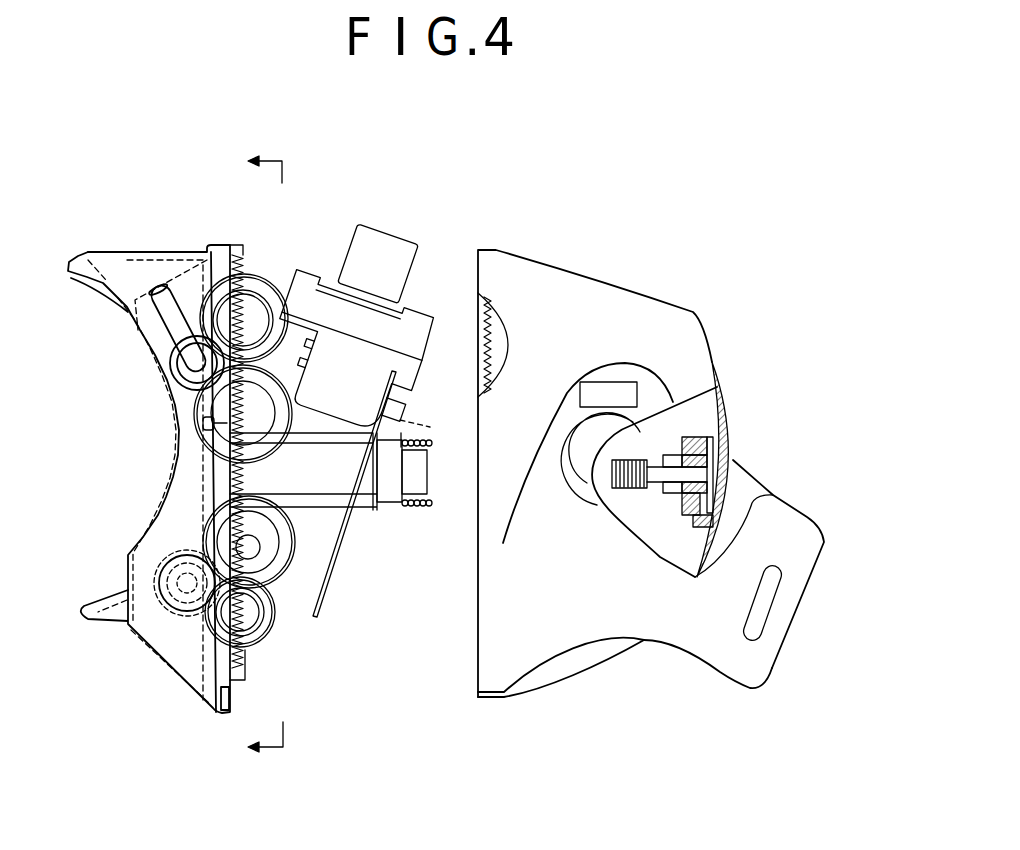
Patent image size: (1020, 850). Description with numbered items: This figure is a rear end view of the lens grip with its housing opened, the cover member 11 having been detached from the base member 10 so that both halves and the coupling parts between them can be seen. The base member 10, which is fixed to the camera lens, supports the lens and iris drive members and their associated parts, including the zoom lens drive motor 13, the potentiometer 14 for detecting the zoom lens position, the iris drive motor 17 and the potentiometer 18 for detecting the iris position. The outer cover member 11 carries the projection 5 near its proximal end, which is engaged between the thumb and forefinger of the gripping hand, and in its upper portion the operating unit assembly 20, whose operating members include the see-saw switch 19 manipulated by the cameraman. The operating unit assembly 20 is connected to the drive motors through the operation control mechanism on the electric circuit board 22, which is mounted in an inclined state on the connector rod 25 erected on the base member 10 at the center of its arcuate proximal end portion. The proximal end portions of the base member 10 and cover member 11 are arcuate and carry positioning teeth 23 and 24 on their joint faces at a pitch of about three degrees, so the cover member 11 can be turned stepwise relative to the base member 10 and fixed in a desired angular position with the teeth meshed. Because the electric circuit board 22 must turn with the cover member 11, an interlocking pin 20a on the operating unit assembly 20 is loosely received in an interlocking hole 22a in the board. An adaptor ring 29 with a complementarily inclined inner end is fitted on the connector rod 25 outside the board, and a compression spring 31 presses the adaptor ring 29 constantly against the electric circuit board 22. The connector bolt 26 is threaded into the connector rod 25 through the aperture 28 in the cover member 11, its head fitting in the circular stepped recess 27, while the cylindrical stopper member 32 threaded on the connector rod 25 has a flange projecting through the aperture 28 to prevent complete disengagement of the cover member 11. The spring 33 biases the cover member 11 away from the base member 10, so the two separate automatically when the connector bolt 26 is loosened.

The projection 5 is at (796, 627).
The base member 10 is at (177, 683).
The cover member 11 is at (587, 677).
The zoom lens drive motor 13 is at (267, 570).
The potentiometer 14 is at (268, 632).
The iris drive motor 17 is at (263, 290).
The potentiometer 18 is at (247, 400).
The see-saw switch 19 is at (405, 241).
The operating unit assembly 20 is at (421, 300).
The interlocking pin 20a is at (398, 407).
The electric circuit board 22 is at (328, 588).
The interlocking hole 22a is at (437, 423).
The positioning teeth 23 is at (243, 262).
The positioning teeth 24 is at (505, 343).
The connector rod 25 is at (260, 475).
The connector bolt 26 is at (707, 473).
The circular stepped recess 27 is at (738, 443).
The aperture 28 is at (673, 493).
The adaptor ring 29 is at (370, 502).
The compression spring 31 is at (387, 507).
The cylindrical stopper member 32 is at (700, 392).
The spring 33 is at (418, 500).